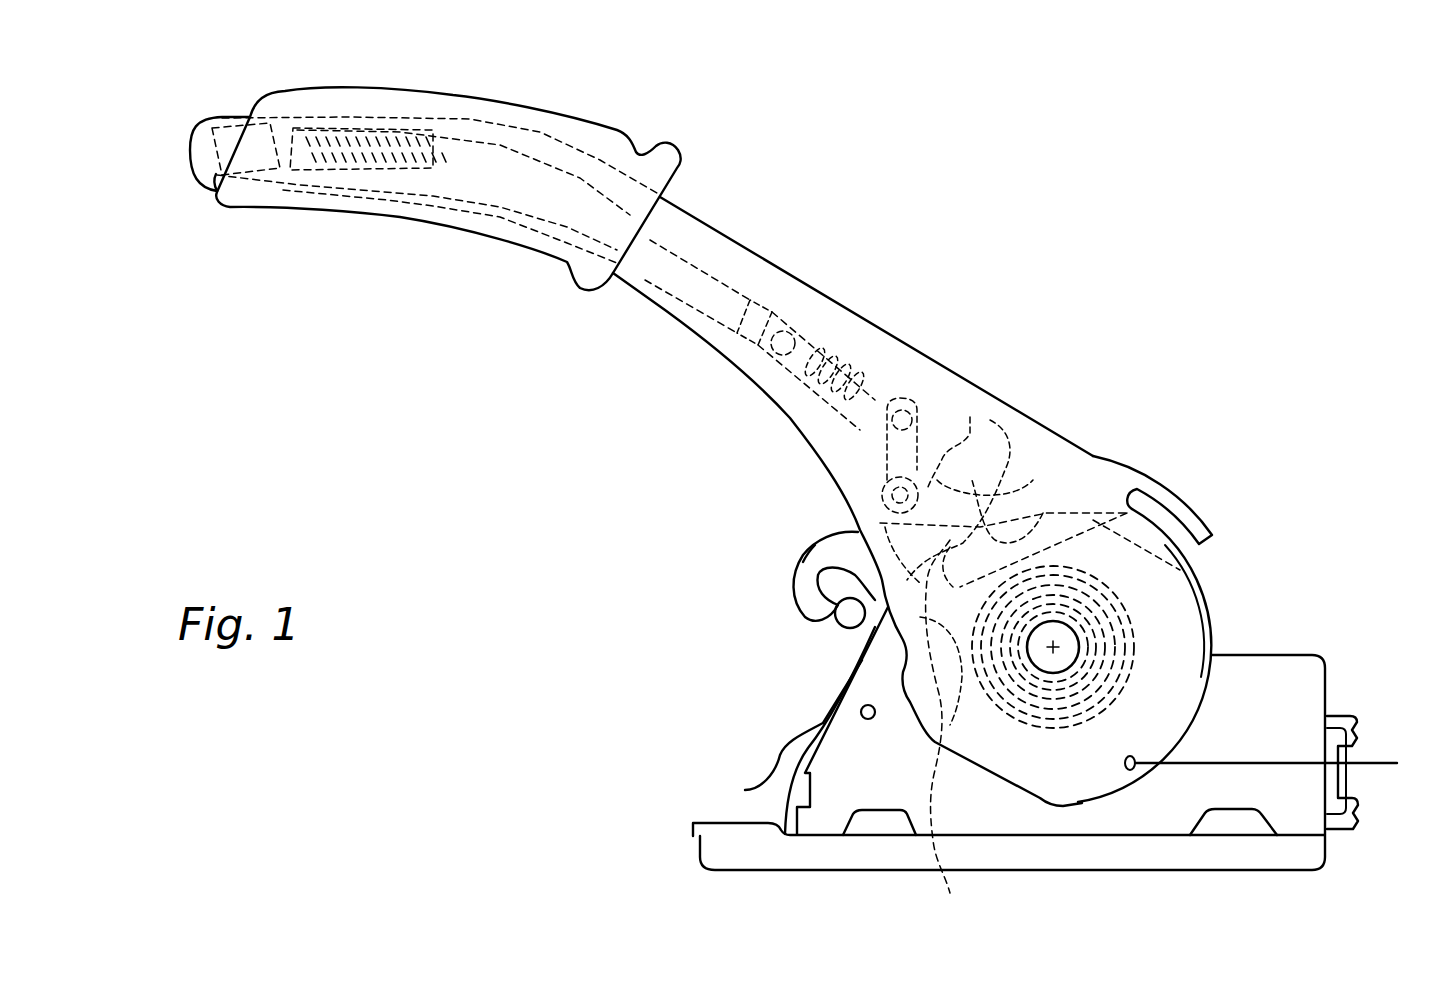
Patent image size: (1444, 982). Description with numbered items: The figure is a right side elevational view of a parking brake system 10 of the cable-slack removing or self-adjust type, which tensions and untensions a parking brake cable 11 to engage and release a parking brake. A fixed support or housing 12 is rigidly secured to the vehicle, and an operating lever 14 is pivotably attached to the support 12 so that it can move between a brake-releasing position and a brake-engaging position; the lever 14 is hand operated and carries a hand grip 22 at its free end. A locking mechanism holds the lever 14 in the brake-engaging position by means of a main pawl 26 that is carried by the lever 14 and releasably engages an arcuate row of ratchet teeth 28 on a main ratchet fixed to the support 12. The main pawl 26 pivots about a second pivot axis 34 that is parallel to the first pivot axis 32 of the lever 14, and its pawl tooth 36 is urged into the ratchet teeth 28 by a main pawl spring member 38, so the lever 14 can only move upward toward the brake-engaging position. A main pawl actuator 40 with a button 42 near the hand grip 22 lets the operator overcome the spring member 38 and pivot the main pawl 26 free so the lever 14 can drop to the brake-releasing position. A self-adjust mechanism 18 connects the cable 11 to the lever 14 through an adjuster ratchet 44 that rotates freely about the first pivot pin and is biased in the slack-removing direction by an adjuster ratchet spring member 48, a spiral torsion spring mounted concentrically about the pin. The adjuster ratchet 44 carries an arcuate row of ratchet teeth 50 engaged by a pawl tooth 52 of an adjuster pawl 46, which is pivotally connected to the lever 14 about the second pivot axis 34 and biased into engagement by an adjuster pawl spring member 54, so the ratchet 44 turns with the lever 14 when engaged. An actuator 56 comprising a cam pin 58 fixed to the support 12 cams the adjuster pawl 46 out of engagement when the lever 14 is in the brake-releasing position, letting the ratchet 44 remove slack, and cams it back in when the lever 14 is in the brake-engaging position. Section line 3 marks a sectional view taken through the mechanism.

The parking brake system 10 is at (452, 452).
The parking brake cable 11 is at (1377, 763).
The fixed support or housing 12 is at (757, 790).
The operating lever 14 is at (893, 343).
The self-adjust mechanism 18 is at (802, 557).
The hand grip 22 is at (547, 104).
The main pawl 26 is at (862, 485).
The ratchet teeth 28 is at (953, 727).
The first pivot axis 32 is at (1053, 650).
The second pivot axis 34 is at (893, 493).
The pawl tooth 36 is at (1160, 491).
The main pawl spring member 38 is at (366, 142).
The main pawl actuator 40 is at (234, 118).
The button 42 is at (201, 184).
The adjuster ratchet 44 is at (929, 662).
The adjuster pawl 46 is at (820, 547).
The adjuster ratchet spring member 48 is at (1107, 643).
The ratchet teeth 50 is at (930, 687).
The pawl tooth 52 is at (1043, 513).
The adjuster pawl spring member 54 is at (970, 417).
The actuator 56 is at (839, 628).
The cam pin 58 is at (867, 617).
The section line 3- 3 is at (830, 440).